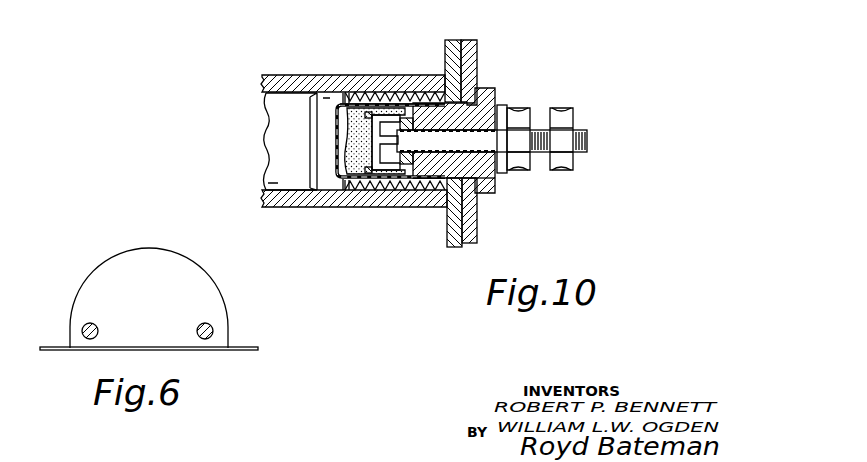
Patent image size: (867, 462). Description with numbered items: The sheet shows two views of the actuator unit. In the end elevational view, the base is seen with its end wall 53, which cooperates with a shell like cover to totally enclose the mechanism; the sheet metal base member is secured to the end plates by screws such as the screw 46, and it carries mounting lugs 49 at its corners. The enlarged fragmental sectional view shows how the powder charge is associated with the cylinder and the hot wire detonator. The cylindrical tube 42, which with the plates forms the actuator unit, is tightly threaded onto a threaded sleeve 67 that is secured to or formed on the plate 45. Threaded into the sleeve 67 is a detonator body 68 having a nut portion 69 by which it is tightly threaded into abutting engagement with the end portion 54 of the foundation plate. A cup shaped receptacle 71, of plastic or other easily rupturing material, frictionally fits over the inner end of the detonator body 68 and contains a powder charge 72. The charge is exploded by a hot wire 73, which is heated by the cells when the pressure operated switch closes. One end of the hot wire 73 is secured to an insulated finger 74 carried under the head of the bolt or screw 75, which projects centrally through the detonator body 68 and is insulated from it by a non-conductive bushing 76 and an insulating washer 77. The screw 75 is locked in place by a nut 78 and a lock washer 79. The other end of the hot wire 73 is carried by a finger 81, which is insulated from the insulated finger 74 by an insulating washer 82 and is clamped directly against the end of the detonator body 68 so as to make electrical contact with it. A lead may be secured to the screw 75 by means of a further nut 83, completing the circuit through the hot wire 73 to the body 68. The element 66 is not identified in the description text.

In FIG. 10, the cylindrical tube 42 is at (287, 80).
In FIG. 10, the plate 45 is at (450, 41).
In FIG. 10, the end wall 54 is at (472, 71).
In FIG. 10, the panel 66 is at (283, 164).
In FIG. 10, the threaded sleeve 67 is at (348, 97).
In FIG. 10, the detonator body 68 is at (478, 208).
In FIG. 10, the nut portion 69 is at (496, 197).
In FIG. 10, the cup shaped receptacle 71 is at (404, 188).
In FIG. 10, the powder charge 72 is at (338, 182).
In FIG. 10, the hot wire 73 is at (360, 180).
In FIG. 10, the insulated finger 74 is at (379, 172).
In FIG. 10, the bolt or screw 75 is at (470, 149).
In FIG. 10, the non-conductive bushing 76 is at (426, 112).
In FIG. 10, the insulating washer 77 is at (500, 178).
In FIG. 10, the nut 78 is at (520, 108).
In FIG. 10, the lock washer 79 is at (507, 104).
In FIG. 10, the finger 81 is at (385, 103).
In FIG. 10, the insulating washer 82 is at (412, 183).
In FIG. 10, the nut 83 is at (565, 108).
In FIG. 6, the end wall 53 is at (156, 292).
In FIG. 6, the screw 46 is at (82, 327).
In FIG. 6, the mounting lug 49 is at (248, 351).